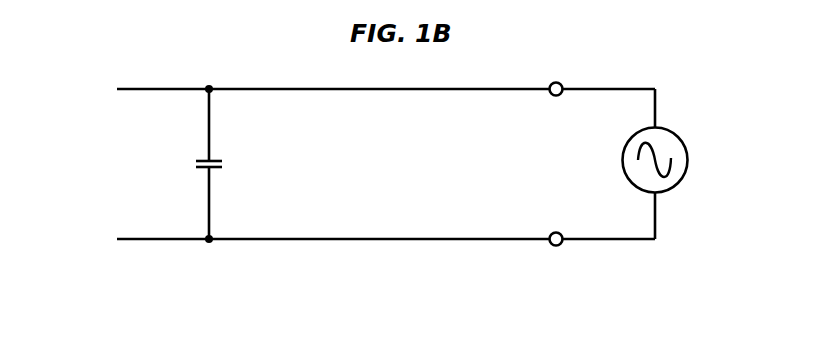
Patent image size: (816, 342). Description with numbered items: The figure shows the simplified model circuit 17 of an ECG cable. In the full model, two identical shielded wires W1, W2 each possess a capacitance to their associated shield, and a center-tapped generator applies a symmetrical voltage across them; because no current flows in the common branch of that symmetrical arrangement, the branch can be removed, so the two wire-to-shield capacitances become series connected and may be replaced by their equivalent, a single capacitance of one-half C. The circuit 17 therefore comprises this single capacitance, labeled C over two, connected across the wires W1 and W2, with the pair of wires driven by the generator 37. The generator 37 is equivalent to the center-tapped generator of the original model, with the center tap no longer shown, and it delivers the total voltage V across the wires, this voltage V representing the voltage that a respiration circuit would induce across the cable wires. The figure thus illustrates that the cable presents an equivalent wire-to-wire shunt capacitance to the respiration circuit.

The circuit 17 is at (353, 193).
The wire W1 is at (376, 76).
The wire W2 is at (376, 228).
The generator 37 is at (675, 164).
The voltage V is at (674, 160).